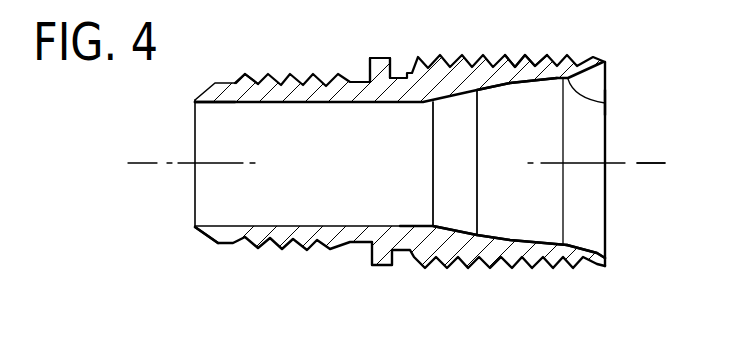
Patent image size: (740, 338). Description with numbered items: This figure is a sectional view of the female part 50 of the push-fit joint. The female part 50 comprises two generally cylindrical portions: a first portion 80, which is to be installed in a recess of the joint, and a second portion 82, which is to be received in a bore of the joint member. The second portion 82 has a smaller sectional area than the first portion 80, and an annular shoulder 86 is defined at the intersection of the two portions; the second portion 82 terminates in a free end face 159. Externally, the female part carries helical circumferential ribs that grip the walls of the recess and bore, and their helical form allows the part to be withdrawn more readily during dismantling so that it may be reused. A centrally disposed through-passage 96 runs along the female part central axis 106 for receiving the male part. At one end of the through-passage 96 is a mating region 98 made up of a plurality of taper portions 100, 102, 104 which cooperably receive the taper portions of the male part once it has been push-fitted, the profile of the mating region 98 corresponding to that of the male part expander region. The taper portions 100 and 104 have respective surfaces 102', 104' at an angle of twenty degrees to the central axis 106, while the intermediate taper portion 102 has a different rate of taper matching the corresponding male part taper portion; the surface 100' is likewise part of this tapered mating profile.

The female part 50 is at (203, 255).
The first portion 80 is at (531, 57).
The second portion 82 is at (240, 83).
The annular shoulder 86 is at (372, 63).
The through-passage 96 is at (223, 104).
The mating region 98 is at (556, 206).
The taper portion 100 is at (571, 281).
The inner surface portion 100' is at (649, 105).
The taper portion 102 is at (517, 274).
The surface 102' is at (509, 161).
The taper portion 104 is at (436, 267).
The surface 104' is at (405, 164).
The central axis 106 is at (622, 180).
The free end face 159 is at (193, 232).